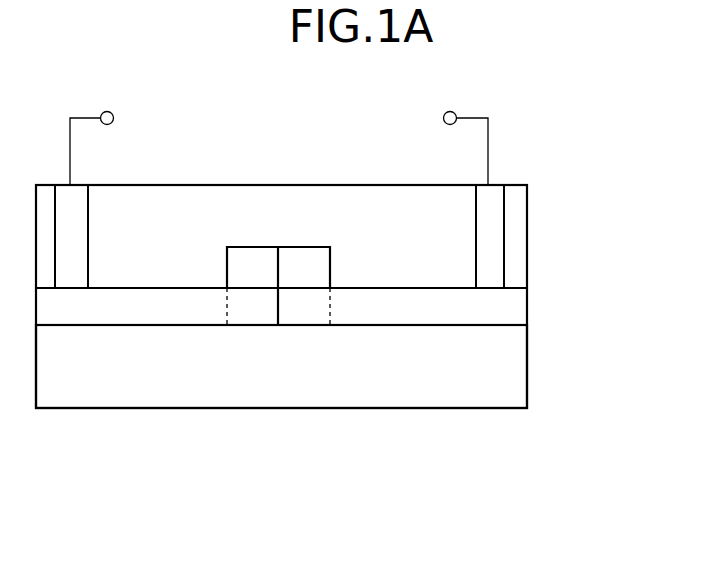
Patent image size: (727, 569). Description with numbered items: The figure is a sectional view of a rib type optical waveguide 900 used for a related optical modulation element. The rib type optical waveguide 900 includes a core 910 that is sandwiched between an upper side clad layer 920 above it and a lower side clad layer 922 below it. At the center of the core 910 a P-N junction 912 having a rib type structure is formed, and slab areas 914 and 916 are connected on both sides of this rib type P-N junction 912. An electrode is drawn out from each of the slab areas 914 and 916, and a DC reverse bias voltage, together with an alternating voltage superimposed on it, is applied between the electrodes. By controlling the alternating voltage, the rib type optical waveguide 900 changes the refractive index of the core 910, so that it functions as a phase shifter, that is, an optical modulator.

The rib type optical waveguide 900 is at (690, 81).
The core 910 is at (281, 396).
The P-N junction 912 is at (300, 310).
The slab area 914 is at (155, 310).
The slab area 916 is at (428, 389).
The upper side clad layer 920 is at (203, 217).
The lower side clad layer 922 is at (497, 368).